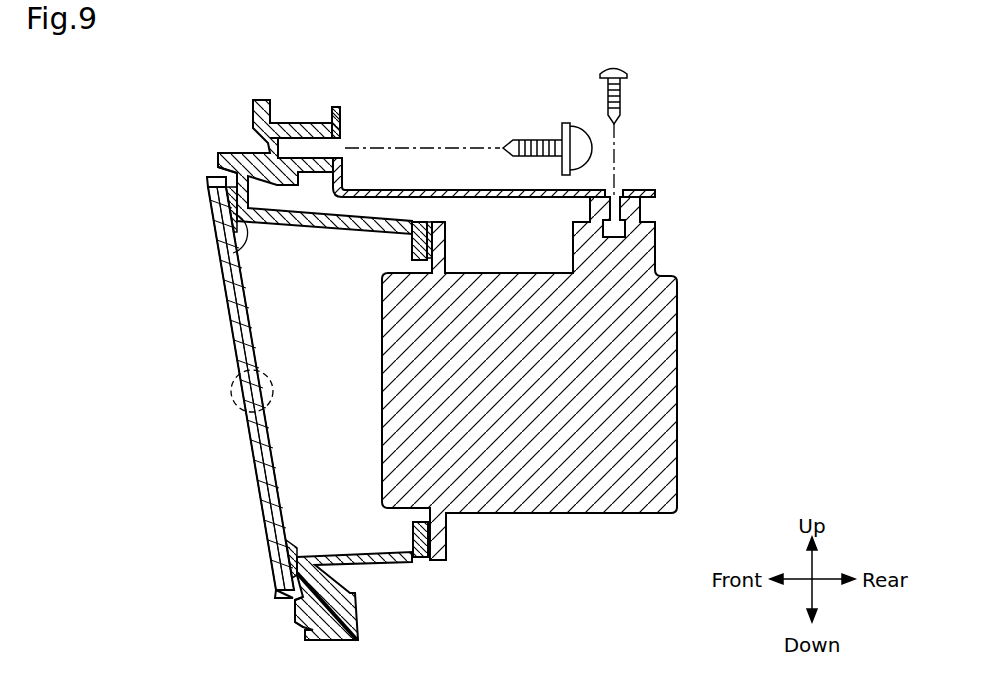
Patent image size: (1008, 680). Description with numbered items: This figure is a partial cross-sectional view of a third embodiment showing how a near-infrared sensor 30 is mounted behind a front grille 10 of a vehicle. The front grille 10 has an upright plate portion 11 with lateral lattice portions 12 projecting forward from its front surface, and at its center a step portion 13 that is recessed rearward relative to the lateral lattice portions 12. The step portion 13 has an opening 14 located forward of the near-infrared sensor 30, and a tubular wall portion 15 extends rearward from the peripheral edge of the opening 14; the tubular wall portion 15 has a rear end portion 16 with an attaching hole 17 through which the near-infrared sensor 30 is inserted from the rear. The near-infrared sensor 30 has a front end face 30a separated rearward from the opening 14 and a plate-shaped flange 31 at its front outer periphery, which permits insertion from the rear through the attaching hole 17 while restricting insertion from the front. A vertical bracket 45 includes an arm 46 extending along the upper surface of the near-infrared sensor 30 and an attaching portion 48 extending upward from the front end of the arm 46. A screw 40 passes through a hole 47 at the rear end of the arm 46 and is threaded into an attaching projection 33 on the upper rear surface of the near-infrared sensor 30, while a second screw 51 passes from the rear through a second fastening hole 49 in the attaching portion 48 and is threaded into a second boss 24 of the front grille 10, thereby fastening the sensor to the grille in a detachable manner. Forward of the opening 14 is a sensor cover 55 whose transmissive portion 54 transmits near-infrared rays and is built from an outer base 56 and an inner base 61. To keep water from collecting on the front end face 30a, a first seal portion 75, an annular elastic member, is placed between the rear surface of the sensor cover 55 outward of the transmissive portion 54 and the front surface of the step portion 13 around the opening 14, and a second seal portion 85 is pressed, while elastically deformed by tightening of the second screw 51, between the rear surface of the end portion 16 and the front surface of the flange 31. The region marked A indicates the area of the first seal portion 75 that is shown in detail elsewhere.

The front grille 10 is at (315, 135).
The plate portion 11 is at (260, 96).
The lateral lattice portions 12 is at (218, 163).
The step portion 13 is at (208, 186).
The opening 14 is at (226, 253).
The tubular wall portion 15 is at (385, 563).
The end portion 16 is at (412, 245).
The attaching hole 17 is at (410, 260).
The second boss 24 is at (292, 126).
The near-infrared sensor 30 is at (597, 508).
The front end face 30a is at (382, 478).
The flange 31 is at (440, 247).
The attaching projection 33 is at (648, 250).
The screw 40 is at (630, 78).
The vertical bracket 45 is at (526, 168).
The arm 46 is at (642, 188).
The hole 47 is at (617, 182).
The attaching portion 48 is at (338, 107).
The second fastening hole 49 is at (342, 137).
The second screw 51 is at (543, 137).
The transmissive portion 54 is at (252, 462).
The sensor cover 55 is at (218, 388).
The outer base 56 is at (232, 315).
The inner base 61 is at (253, 340).
The first seal portion 75 is at (222, 237).
The second seal portion 85 is at (432, 222).
The detail region A is at (228, 386).